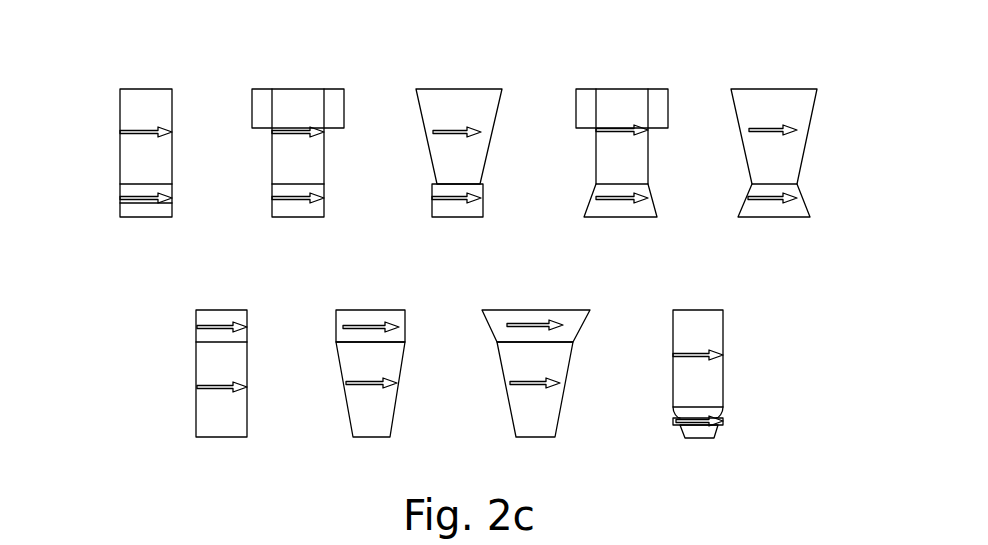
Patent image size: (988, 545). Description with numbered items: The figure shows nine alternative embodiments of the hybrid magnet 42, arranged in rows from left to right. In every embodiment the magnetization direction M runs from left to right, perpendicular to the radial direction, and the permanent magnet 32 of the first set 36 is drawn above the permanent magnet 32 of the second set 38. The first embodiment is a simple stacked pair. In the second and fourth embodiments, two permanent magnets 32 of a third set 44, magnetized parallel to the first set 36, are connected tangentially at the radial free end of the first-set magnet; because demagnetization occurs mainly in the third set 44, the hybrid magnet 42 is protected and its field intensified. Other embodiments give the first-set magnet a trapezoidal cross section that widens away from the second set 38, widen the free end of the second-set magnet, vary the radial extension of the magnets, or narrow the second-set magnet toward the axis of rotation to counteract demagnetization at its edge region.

The permanent magnet 32 is at (260, 108).
The first set 36 is at (125, 108).
The second set 38 is at (162, 217).
The hybrid magnet 42 is at (138, 95).
The third set 44 is at (265, 97).
The magnetization direction M is at (148, 127).